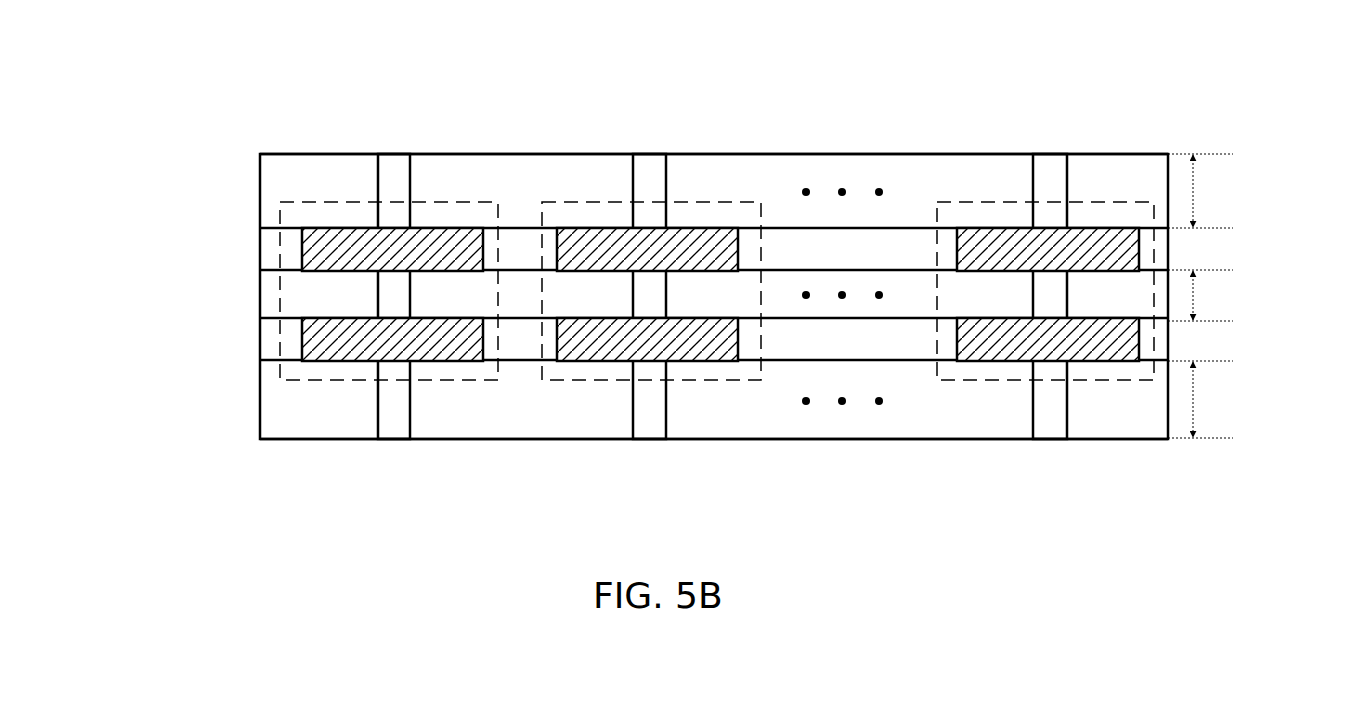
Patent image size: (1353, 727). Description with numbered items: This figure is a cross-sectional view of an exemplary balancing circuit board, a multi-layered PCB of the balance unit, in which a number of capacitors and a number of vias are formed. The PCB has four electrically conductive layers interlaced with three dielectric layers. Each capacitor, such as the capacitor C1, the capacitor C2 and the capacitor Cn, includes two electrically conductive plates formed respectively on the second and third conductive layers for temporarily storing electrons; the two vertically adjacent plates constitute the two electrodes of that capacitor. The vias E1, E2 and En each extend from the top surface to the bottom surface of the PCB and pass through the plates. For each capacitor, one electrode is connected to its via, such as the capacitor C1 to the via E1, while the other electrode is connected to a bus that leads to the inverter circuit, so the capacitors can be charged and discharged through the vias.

The capacitor C1 is at (323, 203).
The capacitor C2 is at (587, 202).
The capacitor Cn is at (978, 203).
The via E1 is at (385, 153).
The via E2 is at (654, 154).
The via En is at (1040, 153).